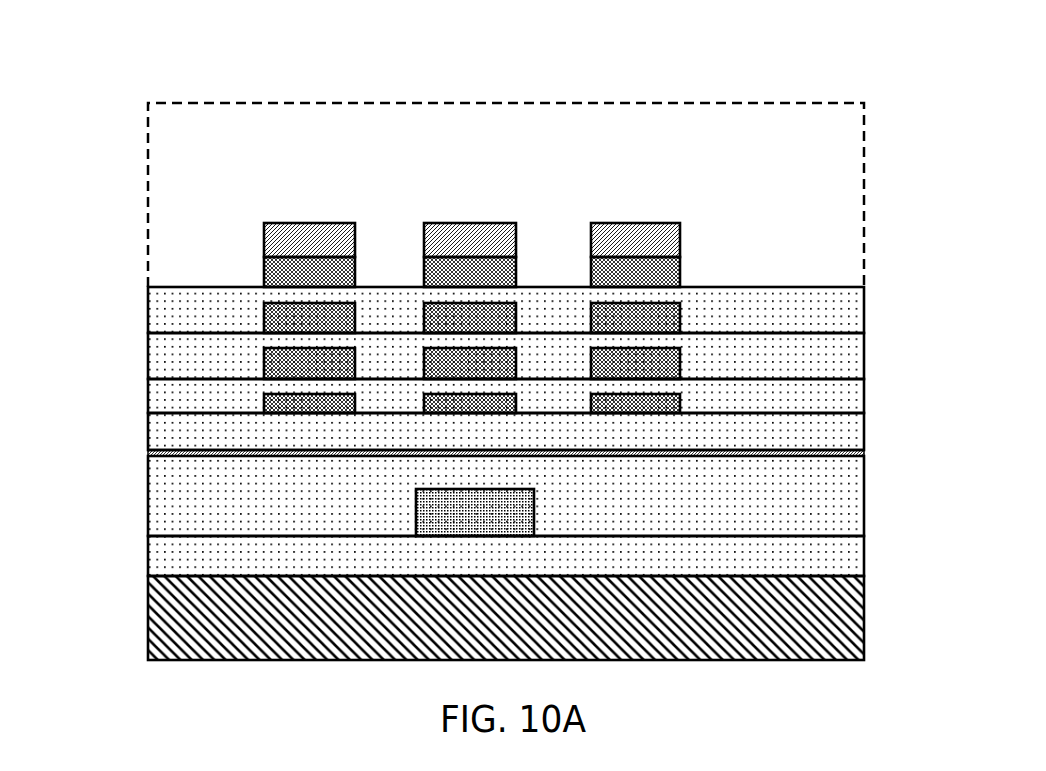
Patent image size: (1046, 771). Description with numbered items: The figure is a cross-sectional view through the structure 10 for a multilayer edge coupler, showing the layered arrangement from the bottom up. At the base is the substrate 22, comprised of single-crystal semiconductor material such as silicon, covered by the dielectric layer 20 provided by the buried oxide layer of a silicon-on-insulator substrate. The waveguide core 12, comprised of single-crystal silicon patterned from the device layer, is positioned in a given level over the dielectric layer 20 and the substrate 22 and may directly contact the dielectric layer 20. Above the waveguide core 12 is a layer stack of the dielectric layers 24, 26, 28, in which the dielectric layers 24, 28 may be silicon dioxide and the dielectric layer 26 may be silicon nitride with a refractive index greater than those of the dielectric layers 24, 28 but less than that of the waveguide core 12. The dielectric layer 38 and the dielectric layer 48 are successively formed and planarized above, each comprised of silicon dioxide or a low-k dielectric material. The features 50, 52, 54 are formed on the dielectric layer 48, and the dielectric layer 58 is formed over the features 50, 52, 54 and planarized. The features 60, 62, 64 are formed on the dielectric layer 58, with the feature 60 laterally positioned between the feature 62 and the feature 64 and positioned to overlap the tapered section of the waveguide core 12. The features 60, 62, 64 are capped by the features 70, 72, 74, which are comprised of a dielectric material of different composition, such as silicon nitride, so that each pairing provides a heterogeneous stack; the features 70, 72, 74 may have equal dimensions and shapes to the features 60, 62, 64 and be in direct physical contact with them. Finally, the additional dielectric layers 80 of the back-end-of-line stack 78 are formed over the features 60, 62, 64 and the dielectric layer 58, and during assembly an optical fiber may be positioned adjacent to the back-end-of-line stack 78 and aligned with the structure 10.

The structure 10 is at (158, 68).
The waveguide core 12 is at (445, 516).
The dielectric layer 20 is at (840, 562).
The substrate 22 is at (840, 631).
The dielectric layer 24 is at (842, 495).
The dielectric layer 26 is at (172, 452).
The dielectric layer 28 is at (838, 431).
The dielectric layer 38 is at (838, 397).
The dielectric layer 48 is at (840, 359).
The feature 50 is at (500, 322).
The feature 52 is at (660, 322).
The feature 54 is at (337, 323).
The dielectric layer 58 is at (835, 316).
The feature 60 is at (477, 278).
The feature 62 is at (642, 278).
The feature 64 is at (318, 280).
The feature 70 is at (455, 245).
The feature 72 is at (627, 235).
The feature 74 is at (298, 242).
The back-end-of-line stack 78 is at (130, 103).
The additional dielectric layers 80 is at (822, 224).